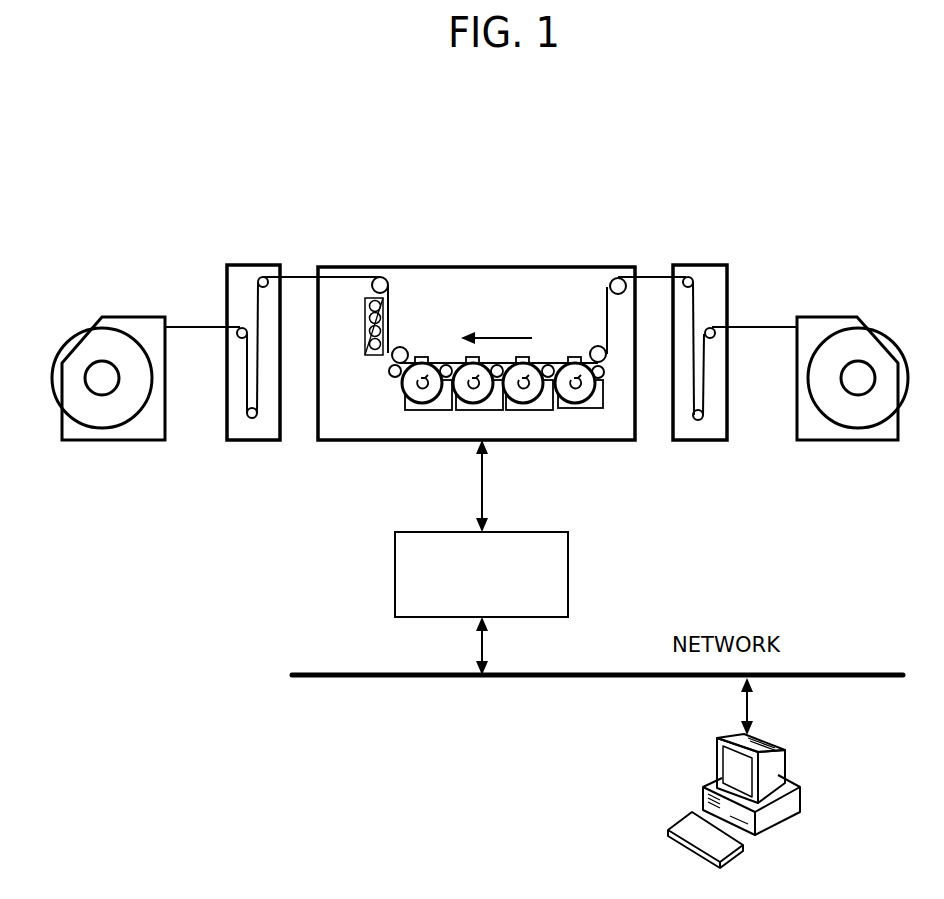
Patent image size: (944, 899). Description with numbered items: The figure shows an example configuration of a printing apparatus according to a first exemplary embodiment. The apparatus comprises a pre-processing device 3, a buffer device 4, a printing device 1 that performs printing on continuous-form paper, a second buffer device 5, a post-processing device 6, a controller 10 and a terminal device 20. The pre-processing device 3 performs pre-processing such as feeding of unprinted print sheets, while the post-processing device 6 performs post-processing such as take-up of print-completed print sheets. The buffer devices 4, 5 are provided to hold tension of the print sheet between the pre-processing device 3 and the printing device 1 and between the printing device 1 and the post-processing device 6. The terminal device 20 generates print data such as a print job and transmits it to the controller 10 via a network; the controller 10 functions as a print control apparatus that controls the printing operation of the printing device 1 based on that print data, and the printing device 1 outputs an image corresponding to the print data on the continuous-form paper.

The printing device 1 is at (392, 267).
The pre-processing device 3 is at (835, 314).
The buffer device 4 is at (701, 263).
The buffer device 5 is at (264, 263).
The post-processing device 6 is at (137, 313).
The controller 10 is at (395, 579).
The terminal device 20 is at (787, 763).